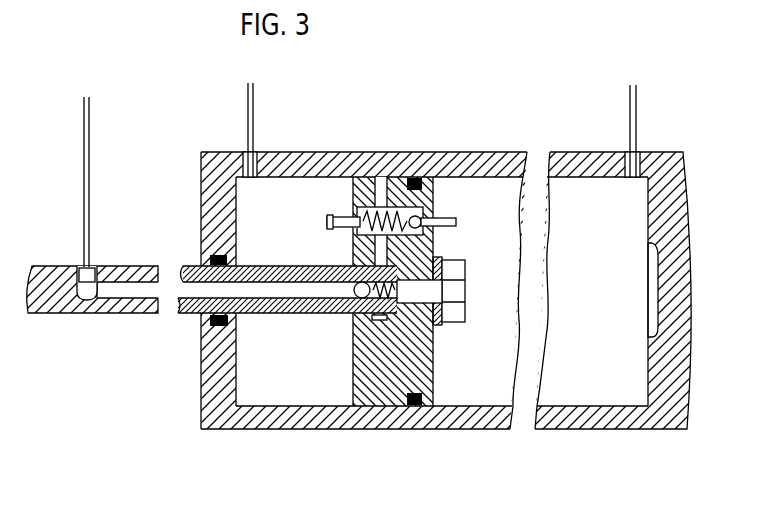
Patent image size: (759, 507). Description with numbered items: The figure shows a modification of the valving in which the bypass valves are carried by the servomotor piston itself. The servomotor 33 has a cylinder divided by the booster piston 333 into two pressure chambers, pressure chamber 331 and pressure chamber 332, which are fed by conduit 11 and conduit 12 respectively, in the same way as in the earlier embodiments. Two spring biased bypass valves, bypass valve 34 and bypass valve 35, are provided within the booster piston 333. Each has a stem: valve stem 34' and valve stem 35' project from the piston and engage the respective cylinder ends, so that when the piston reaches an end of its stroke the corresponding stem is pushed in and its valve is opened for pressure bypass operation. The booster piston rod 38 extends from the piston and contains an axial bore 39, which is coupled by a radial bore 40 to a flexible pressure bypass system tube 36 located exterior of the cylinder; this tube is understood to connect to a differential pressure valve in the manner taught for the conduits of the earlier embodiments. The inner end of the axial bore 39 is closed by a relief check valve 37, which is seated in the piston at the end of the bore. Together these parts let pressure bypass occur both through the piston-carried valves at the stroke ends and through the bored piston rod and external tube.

The conduit 11 is at (255, 133).
The conduit 12 is at (628, 138).
The servomotor 33 is at (633, 440).
The pressure chamber 331 is at (265, 390).
The pressure chamber 332 is at (578, 392).
The booster piston 333 is at (390, 385).
The bypass valve 34 is at (382, 154).
The valve stem 34' is at (323, 208).
The bypass valve 35 is at (433, 153).
The valve stem 35' is at (448, 207).
The flexible pressure bypass system tube 36 is at (90, 155).
The relief check valve 37 is at (353, 320).
The booster piston rod 38 is at (115, 313).
The axial bore 39 is at (203, 288).
The radial bore 40 is at (89, 272).